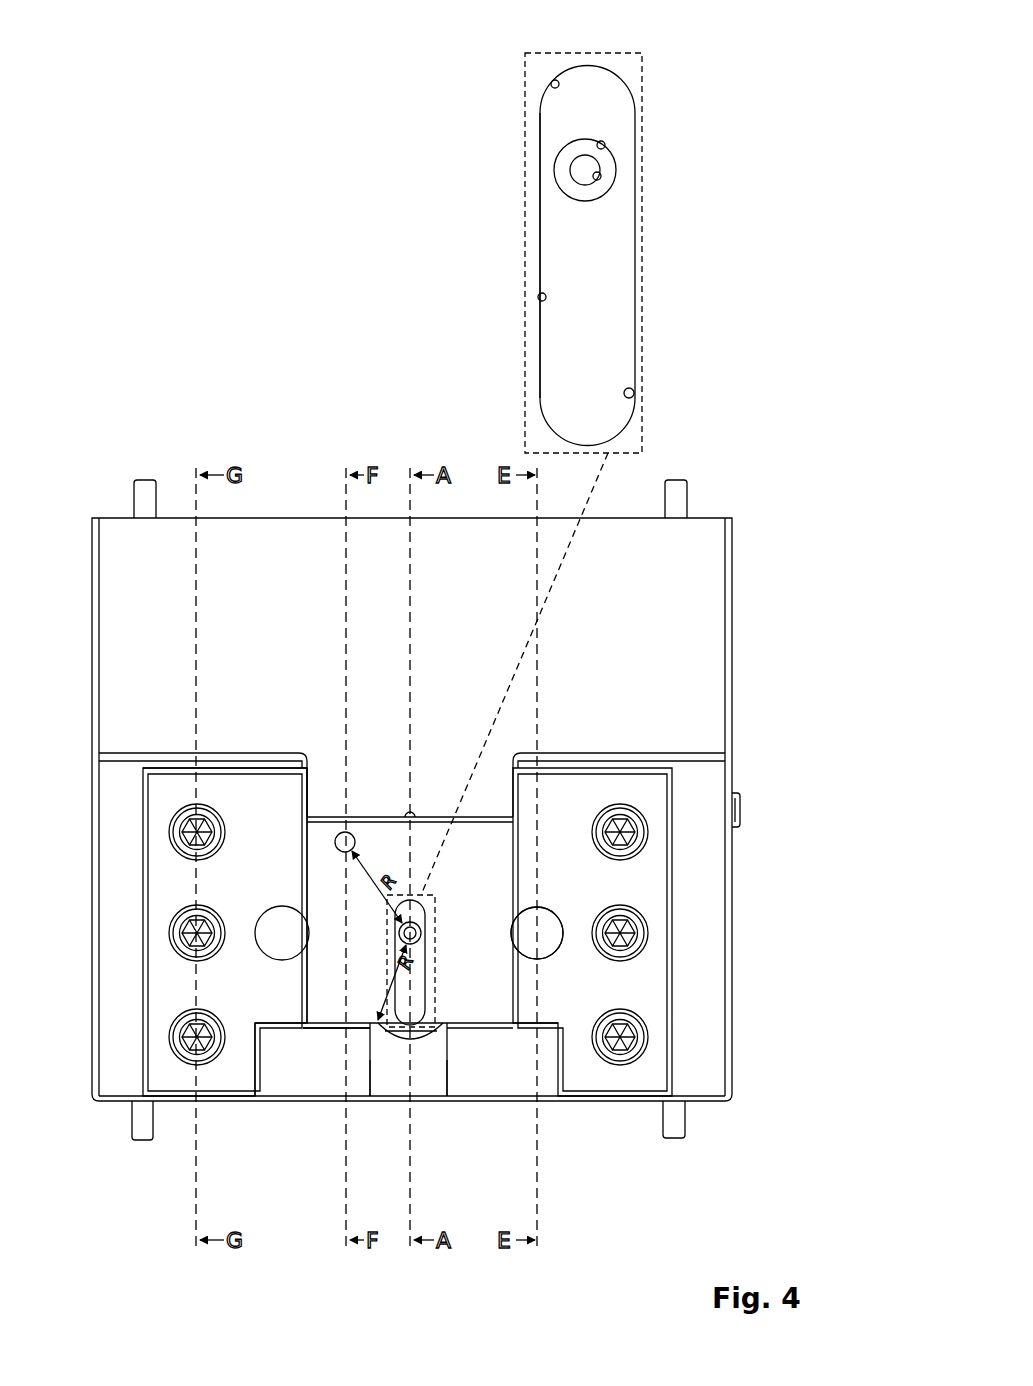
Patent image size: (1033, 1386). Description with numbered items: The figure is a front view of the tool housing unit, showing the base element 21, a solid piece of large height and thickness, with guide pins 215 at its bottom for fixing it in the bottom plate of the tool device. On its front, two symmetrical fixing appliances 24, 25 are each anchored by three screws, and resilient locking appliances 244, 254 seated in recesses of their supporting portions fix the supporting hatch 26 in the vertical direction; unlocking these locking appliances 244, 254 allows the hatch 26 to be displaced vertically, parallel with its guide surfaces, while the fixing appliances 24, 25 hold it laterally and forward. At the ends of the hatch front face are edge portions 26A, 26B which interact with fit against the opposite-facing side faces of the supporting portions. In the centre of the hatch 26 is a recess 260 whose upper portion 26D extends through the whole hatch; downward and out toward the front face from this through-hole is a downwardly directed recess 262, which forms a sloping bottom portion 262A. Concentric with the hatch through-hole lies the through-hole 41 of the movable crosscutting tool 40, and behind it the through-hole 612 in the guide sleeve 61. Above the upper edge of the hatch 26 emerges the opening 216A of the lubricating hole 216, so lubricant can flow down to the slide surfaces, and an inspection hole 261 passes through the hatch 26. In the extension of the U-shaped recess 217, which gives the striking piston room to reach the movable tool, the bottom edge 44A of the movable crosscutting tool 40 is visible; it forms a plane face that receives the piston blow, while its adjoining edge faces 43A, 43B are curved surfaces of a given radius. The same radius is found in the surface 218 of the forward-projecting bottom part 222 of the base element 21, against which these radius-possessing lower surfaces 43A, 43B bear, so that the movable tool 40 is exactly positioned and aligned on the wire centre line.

The base element 21 is at (653, 642).
The guide pins 215 is at (678, 1115).
The lubricating hole 216 is at (742, 813).
The opening of the lubricating duct 216A is at (416, 812).
The recess 217 is at (380, 1087).
The surface 218 is at (370, 1017).
The part of the base element 222 is at (503, 1063).
The fixing appliance 24 is at (168, 875).
The resilient locking appliance 244 is at (260, 952).
The fixing appliance 25 is at (653, 908).
The resilient locking appliance 254 is at (417, 973).
The supporting hatch 26 is at (338, 963).
The edge portion 26A is at (517, 875).
The edge portion 26B is at (302, 838).
The upper portion of the recess 26D is at (555, 84).
The recess 260 is at (542, 296).
The inspection hole 261 is at (336, 842).
The downwardly directed recess 262 is at (594, 274).
The sloping bottom portion 262A is at (639, 378).
The movable crosscutting tool 40 is at (571, 109).
The through-hole 41 is at (601, 142).
The guide sleeve 61 is at (608, 166).
The through-hole 612 is at (600, 177).
The curved edge face 43A is at (366, 1028).
The curved edge face 43B is at (447, 1030).
The bottom edge 44A is at (412, 1032).